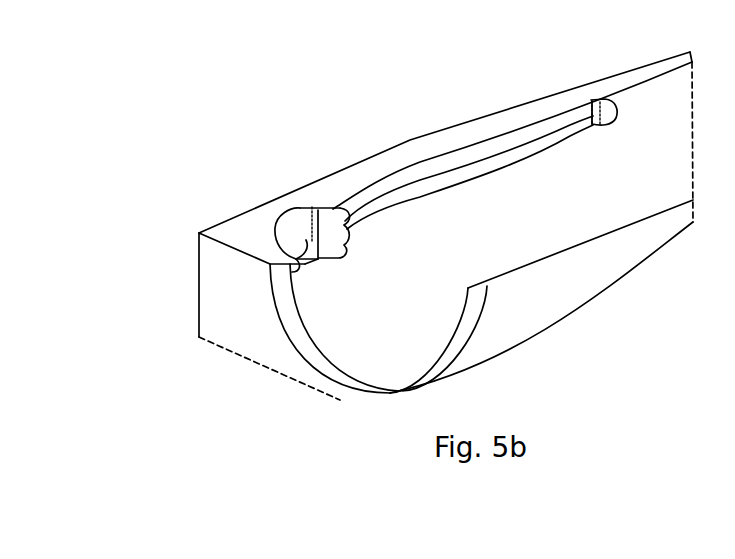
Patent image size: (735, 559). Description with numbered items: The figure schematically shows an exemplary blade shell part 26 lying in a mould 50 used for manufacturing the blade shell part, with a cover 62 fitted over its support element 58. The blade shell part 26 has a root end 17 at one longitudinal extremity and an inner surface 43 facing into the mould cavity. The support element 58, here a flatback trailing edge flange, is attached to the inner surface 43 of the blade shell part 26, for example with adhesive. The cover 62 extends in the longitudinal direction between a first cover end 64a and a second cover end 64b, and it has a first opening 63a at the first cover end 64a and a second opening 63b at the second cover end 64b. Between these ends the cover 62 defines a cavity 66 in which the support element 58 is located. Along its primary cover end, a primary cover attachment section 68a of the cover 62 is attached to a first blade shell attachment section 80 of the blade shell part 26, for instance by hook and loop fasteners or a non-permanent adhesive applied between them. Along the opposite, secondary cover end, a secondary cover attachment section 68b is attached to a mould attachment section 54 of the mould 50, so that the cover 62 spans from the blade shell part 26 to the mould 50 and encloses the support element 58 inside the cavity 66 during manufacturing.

The root end 17 is at (313, 378).
The blade shell part 26 is at (470, 93).
The inner surface 43 is at (628, 213).
The mould 50 is at (232, 314).
The mould attachment section 54 is at (266, 256).
The support element 58 is at (240, 183).
The cover 62 is at (400, 158).
The first opening 63a is at (299, 219).
The second opening 63b is at (591, 112).
The first cover end 64a is at (315, 208).
The second cover end 64b is at (591, 100).
The cavity 66 is at (281, 204).
The primary cover attachment section 68a is at (501, 167).
The secondary cover attachment section 68b is at (283, 244).
The first blade shell attachment section 80 is at (481, 181).